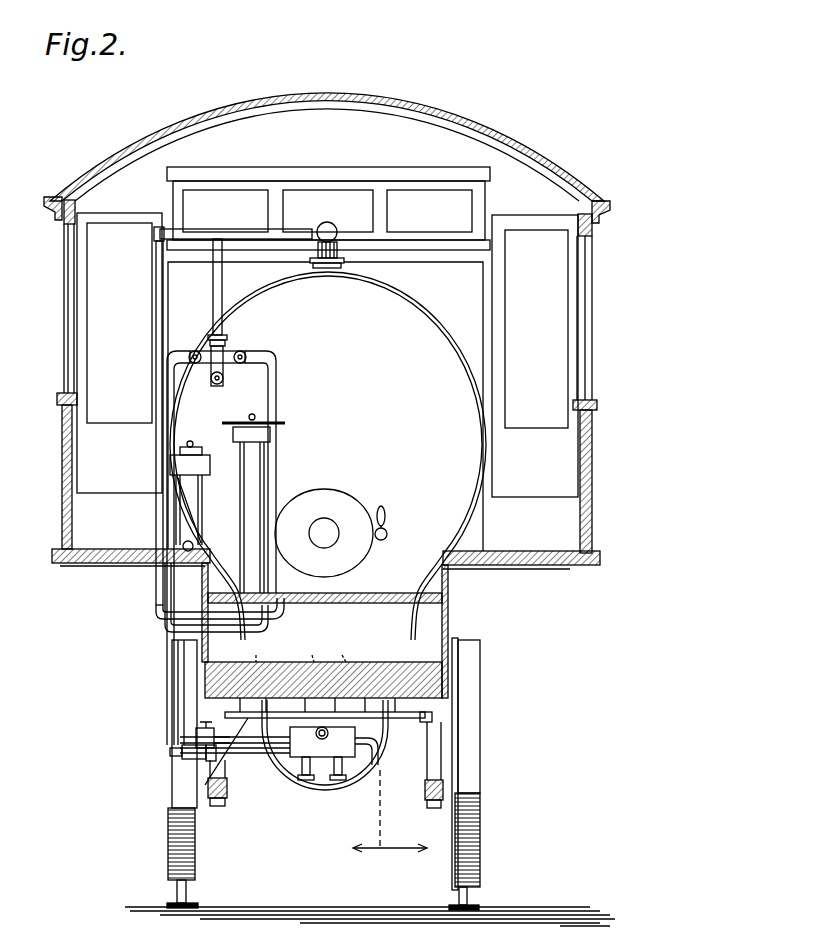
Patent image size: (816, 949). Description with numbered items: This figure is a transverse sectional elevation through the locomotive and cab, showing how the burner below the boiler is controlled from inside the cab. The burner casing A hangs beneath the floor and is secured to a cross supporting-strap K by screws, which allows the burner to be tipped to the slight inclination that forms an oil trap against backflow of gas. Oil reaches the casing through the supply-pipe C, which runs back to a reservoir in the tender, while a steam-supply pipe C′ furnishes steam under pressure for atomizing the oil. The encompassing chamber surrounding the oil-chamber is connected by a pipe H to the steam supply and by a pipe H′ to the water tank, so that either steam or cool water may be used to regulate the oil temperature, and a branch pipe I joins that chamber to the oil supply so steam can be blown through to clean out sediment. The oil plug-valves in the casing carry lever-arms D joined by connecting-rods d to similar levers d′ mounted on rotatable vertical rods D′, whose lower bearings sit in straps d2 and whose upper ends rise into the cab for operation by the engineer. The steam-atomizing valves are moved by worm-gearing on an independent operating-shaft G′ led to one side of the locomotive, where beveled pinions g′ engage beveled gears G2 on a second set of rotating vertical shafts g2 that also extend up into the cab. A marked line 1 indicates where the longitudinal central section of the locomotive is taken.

The steam-supply pipe C′ is at (172, 398).
The rotatable vertical rods D′ is at (243, 468).
The levers d′ is at (252, 646).
The connecting-rods d is at (307, 646).
The lever-arms D is at (338, 646).
The casing A is at (367, 690).
The rotating vertical shafts g2 is at (196, 700).
The beveled gears G2 is at (178, 750).
The beveled pinions g′ is at (196, 758).
The straps d2 is at (228, 748).
The operating-shaft G′ is at (252, 754).
The pipe H is at (262, 772).
The branch pipe I is at (316, 772).
The supply-pipe C is at (331, 762).
The pipe H′ is at (384, 748).
The cross supporting-strap K is at (405, 725).
The line 1 is at (390, 823).